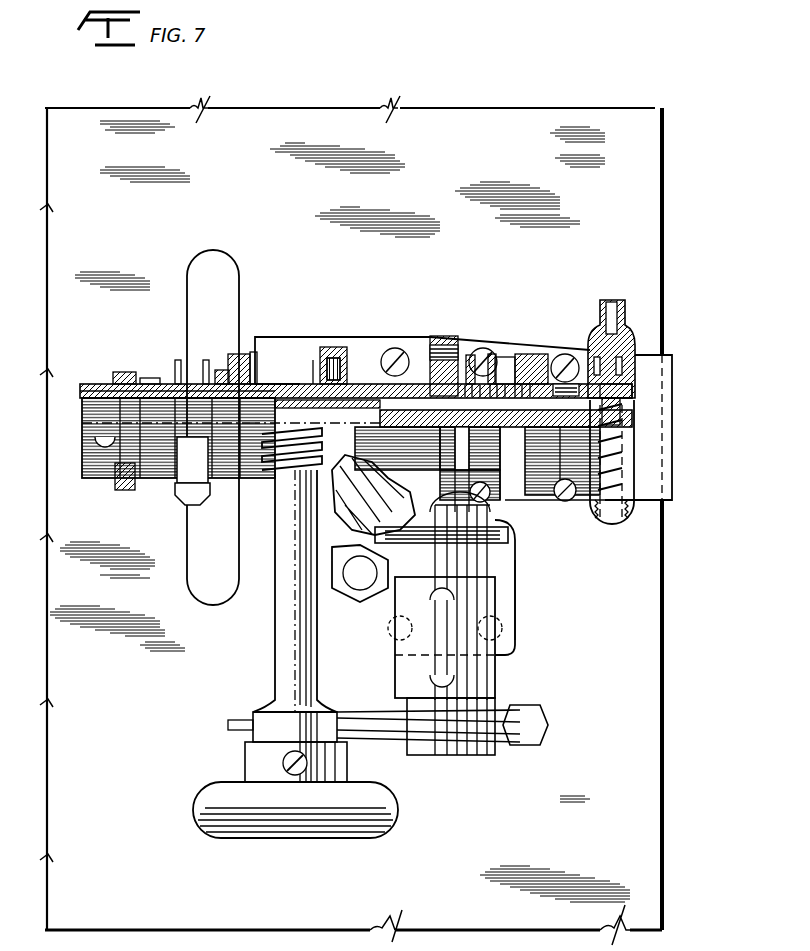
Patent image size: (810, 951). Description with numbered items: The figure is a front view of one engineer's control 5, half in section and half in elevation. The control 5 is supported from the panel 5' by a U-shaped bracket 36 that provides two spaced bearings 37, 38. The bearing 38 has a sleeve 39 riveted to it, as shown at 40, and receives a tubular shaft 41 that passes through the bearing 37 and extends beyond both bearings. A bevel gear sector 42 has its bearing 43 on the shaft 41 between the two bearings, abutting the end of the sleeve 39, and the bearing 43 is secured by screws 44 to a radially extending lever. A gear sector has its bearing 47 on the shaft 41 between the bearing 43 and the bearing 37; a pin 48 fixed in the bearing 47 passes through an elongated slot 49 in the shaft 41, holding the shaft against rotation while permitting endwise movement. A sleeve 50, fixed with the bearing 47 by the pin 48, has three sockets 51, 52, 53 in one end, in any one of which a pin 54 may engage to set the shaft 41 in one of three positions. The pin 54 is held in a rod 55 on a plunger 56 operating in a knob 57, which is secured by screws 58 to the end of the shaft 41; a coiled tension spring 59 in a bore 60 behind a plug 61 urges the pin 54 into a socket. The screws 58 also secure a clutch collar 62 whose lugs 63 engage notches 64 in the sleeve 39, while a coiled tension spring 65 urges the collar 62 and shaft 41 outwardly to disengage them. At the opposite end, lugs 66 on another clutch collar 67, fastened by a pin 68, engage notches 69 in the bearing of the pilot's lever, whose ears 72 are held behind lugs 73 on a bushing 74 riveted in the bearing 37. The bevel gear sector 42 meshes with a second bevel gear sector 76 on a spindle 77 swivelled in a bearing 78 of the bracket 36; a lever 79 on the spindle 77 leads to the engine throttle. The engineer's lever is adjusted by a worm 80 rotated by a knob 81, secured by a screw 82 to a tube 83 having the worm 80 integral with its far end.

The control 5 is at (564, 600).
The panel 5' is at (376, 520).
The bracket 36 is at (520, 358).
The bearing 37 is at (318, 372).
The bearing 38 is at (445, 336).
The sleeve 39 is at (465, 360).
The rivet 40 is at (470, 469).
The tubular shaft 41 is at (355, 385).
The bevel gear sector 42 is at (305, 488).
The bearing 43 is at (347, 350).
The screws 44 is at (340, 348).
The bearing 47 is at (272, 384).
The pin 48 is at (315, 410).
The elongated slot 49 is at (252, 422).
The sleeve 50 is at (339, 411).
The socket 51 is at (397, 448).
The socket 52 is at (405, 364).
The socket 53 is at (506, 406).
The pin 54 is at (470, 448).
The rod 55 is at (593, 430).
The plunger 56 is at (632, 387).
The knob 57 is at (635, 335).
The screws 58 is at (565, 362).
The coiled tension spring 59 is at (665, 492).
The bore 60 is at (590, 502).
The plug 61 is at (628, 526).
The clutch collar 62 is at (585, 455).
The lugs 63 is at (518, 532).
The notches 64 is at (505, 375).
The coiled tension spring 65 is at (478, 352).
The lugs 66 is at (125, 372).
The clutch collar 67 is at (95, 478).
The pin 68 is at (82, 428).
The notches 69 is at (148, 378).
The ears 72 is at (238, 354).
The lugs 73 is at (227, 370).
The bushing 74 is at (253, 360).
The bevel gear sector 76 is at (378, 513).
The spindle 77 is at (452, 487).
The bearing 78 is at (487, 675).
The lever 79 is at (388, 740).
The worm 80 is at (207, 427).
The knob 81 is at (280, 815).
The screw 82 is at (283, 764).
The tube 83 is at (290, 660).